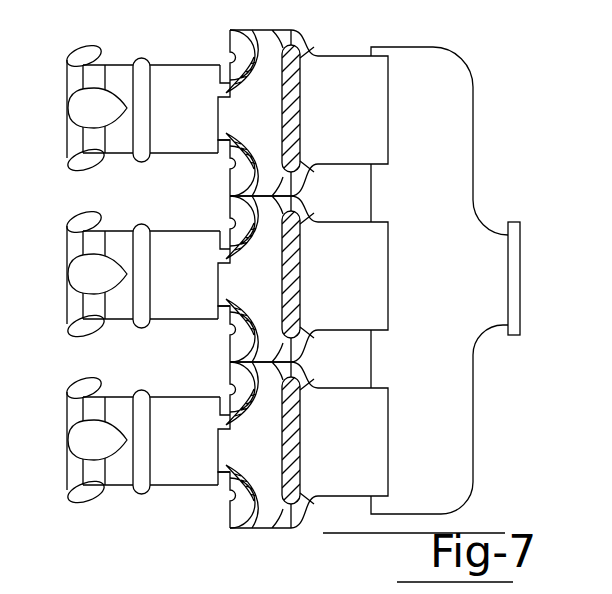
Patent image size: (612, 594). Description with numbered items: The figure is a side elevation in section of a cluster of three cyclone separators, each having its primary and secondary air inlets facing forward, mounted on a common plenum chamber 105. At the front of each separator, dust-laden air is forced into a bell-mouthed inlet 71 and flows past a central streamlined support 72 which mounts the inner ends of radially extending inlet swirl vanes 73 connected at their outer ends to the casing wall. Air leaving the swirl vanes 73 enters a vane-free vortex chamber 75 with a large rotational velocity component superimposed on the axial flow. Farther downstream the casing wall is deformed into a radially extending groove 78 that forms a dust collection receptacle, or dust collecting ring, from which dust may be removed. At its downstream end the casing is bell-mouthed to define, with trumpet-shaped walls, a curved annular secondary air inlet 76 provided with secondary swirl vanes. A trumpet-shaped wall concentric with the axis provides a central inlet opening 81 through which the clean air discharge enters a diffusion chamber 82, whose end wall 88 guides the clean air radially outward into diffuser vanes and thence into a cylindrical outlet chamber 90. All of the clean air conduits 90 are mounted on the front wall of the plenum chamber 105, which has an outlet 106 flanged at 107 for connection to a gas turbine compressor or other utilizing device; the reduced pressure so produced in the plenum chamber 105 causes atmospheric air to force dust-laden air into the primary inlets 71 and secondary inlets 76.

The bell-mouthed inlet 71 is at (67, 138).
The central streamlined support 72 is at (98, 112).
The inlet swirl vanes 73 is at (100, 146).
The vortex chamber 75 is at (180, 101).
The secondary air inlet 76 is at (232, 38).
The groove 78 is at (142, 58).
The central inlet opening 81 is at (220, 110).
The diffusion chamber 82 is at (263, 112).
The end wall 88 is at (300, 152).
The cylindrical outlet chamber 90 is at (349, 97).
The plenum chamber 105 is at (442, 351).
The outlet 106 is at (480, 343).
The flange 107 is at (521, 229).